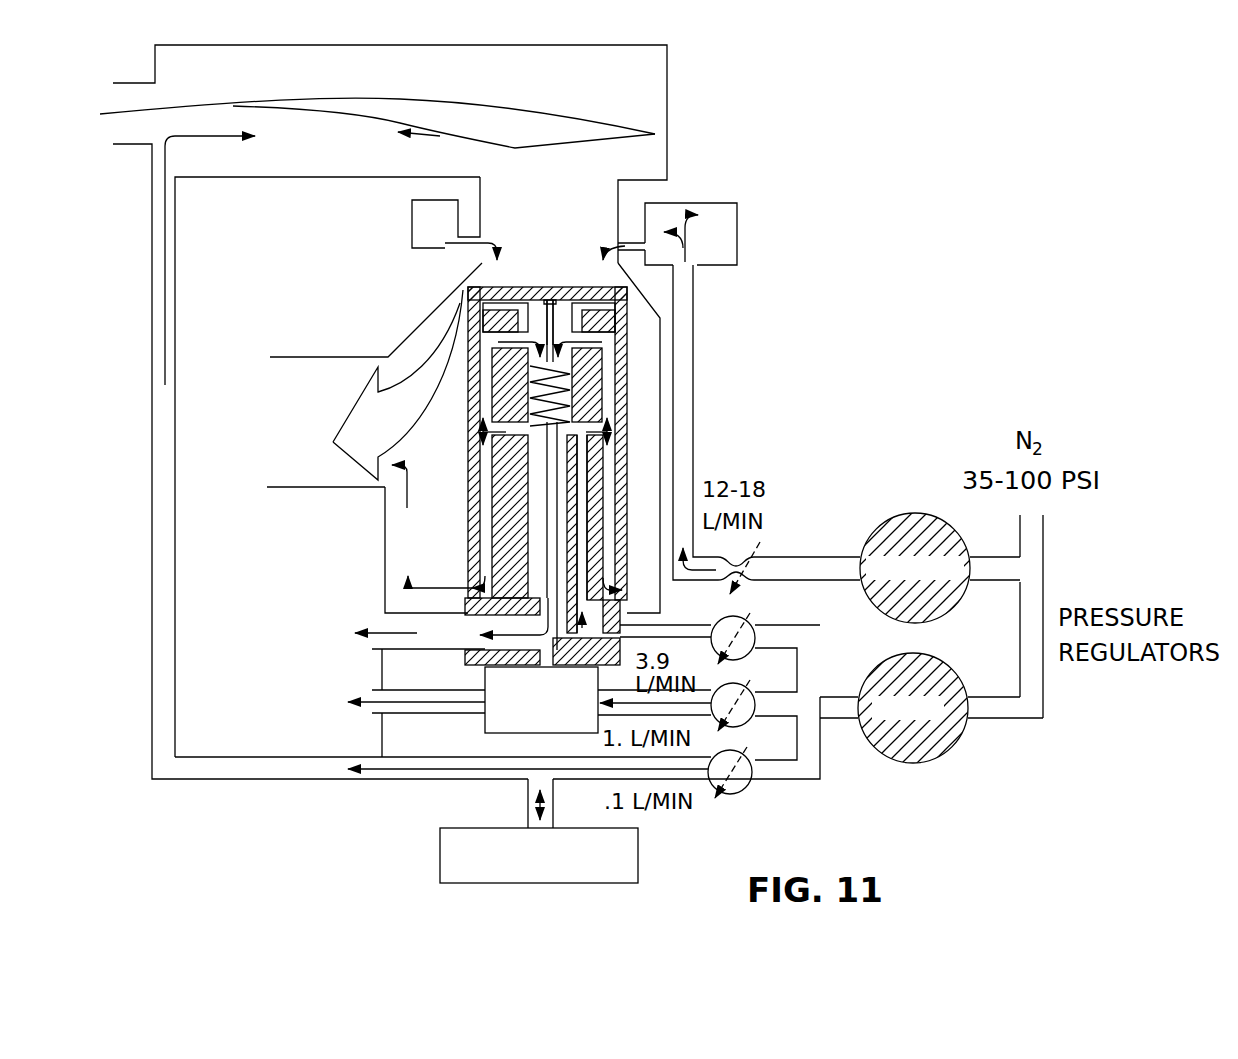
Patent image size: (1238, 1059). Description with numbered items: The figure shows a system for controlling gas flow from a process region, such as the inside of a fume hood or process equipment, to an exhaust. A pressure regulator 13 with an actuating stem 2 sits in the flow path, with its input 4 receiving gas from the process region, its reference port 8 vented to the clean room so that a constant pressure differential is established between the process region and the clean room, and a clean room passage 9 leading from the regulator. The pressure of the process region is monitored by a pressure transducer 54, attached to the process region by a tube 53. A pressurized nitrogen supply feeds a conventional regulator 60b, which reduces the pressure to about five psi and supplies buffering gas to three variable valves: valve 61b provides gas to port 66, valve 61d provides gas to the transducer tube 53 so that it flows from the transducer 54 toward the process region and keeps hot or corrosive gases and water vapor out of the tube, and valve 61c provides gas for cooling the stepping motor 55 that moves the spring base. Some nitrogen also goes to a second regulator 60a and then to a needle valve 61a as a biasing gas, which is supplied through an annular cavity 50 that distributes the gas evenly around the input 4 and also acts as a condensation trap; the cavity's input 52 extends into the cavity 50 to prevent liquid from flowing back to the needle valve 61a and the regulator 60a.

The valve stem 2 is at (505, 287).
The regulator input 4 is at (620, 208).
The reference port 8 is at (315, 487).
The clean room port wall 9 is at (383, 607).
The pressure control valve 13 is at (568, 258).
The annular cavity 50 is at (432, 248).
The cavity input 52 is at (698, 258).
The tube 53 is at (175, 578).
The pressure (vacuum) transducer 54 is at (640, 855).
The stepping motor 55 is at (440, 690).
The second conventional regulator 60a is at (905, 513).
The conventional regulator 60b is at (950, 745).
The variable valve (needle valve) 61a is at (745, 558).
The variable valve 61b is at (750, 621).
The variable valve 61c is at (750, 702).
The variable valve 61d is at (750, 770).
The port 66 is at (662, 625).